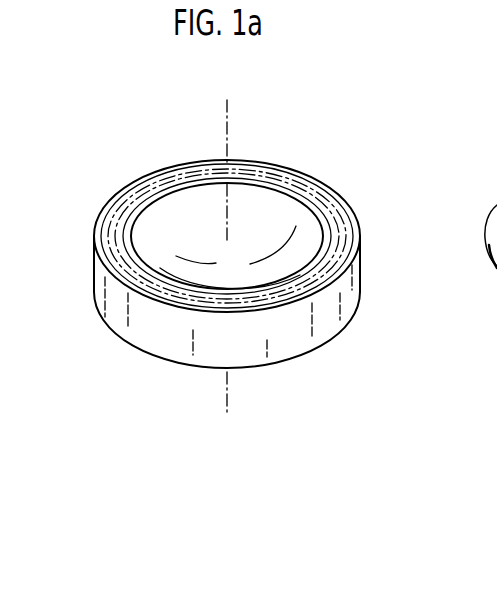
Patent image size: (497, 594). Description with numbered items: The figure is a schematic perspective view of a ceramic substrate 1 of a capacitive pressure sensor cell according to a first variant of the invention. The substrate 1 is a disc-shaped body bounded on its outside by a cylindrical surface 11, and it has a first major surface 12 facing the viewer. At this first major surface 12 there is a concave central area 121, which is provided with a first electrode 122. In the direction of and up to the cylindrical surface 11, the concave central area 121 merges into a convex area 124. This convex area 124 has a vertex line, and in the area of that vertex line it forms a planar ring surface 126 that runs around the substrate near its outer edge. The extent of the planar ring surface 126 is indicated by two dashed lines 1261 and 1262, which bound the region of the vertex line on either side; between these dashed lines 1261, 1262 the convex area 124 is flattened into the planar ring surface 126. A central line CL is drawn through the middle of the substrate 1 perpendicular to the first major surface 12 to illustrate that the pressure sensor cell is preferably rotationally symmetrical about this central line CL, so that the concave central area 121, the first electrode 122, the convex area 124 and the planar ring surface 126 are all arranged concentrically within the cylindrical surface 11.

The ceramic substrate 1 is at (264, 151).
The cylindrical surface 11 is at (325, 328).
The first major surface 12 is at (200, 158).
The concave central area 121 is at (279, 218).
The first electrode 122 is at (148, 240).
The convex area 124 is at (190, 287).
The planar ring surface 126 is at (130, 196).
The dashed line 1261 is at (330, 204).
The dashed line 1262 is at (350, 230).
The central line CL is at (230, 408).